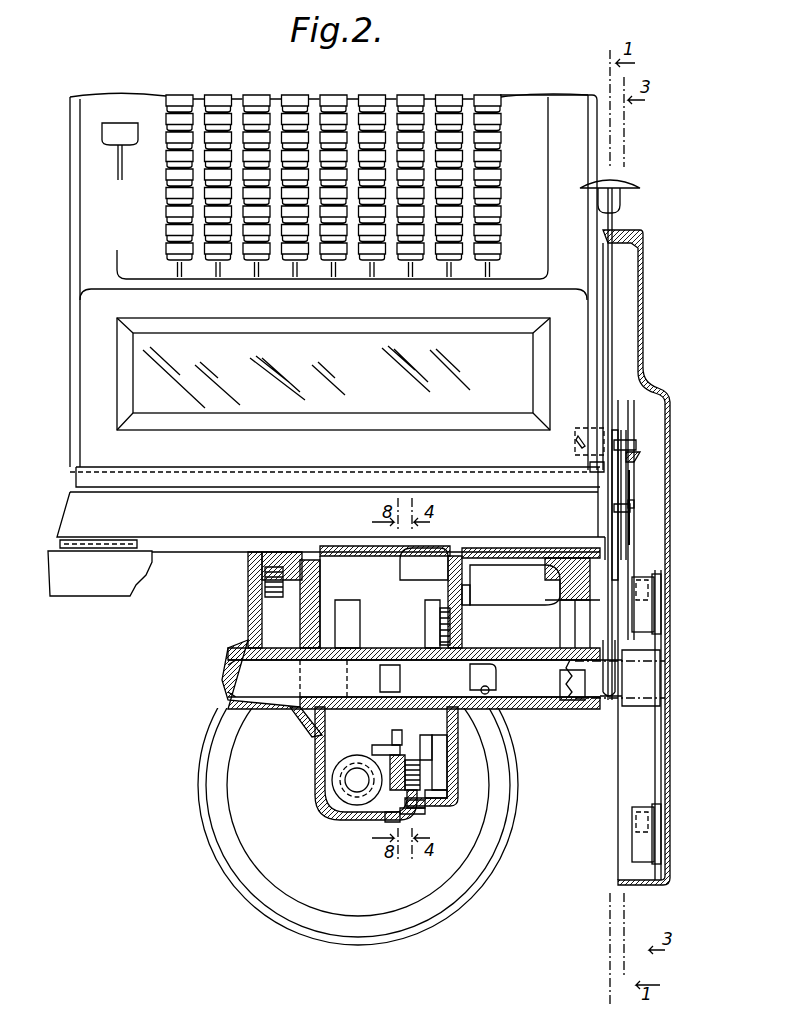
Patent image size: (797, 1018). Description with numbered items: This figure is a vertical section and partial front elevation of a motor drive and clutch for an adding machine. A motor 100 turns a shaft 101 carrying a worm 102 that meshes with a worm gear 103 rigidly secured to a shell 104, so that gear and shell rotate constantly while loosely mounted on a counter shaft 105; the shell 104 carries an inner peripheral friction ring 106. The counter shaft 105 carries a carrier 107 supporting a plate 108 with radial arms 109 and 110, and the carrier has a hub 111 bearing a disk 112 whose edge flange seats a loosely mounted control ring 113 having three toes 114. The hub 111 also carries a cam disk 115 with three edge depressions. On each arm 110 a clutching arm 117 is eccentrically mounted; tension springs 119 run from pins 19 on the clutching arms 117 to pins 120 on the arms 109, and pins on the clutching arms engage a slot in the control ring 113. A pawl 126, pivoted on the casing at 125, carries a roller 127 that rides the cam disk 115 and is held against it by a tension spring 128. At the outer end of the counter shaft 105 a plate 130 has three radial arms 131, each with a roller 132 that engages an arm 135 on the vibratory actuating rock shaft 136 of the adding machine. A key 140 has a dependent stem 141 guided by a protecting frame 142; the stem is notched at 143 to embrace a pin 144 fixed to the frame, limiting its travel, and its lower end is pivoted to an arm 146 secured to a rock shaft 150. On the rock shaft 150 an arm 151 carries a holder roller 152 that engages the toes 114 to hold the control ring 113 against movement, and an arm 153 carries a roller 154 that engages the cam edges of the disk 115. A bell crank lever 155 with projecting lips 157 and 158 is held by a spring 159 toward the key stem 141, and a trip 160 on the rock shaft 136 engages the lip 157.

The pins 19 is at (392, 738).
The motor 100 is at (288, 906).
The shaft 101 is at (345, 780).
The worm 102 is at (330, 800).
The worm gear 103 is at (320, 590).
The shell 104 is at (380, 586).
The counter shaft 105 is at (240, 684).
The inner peripheral friction ring 106 is at (408, 582).
The carrier 107 is at (470, 725).
The plate 108 is at (350, 640).
The radial arms 109 is at (458, 548).
The radial arms 110 is at (390, 680).
The hub 111 is at (442, 640).
The disk 112 is at (472, 556).
The control ring 113 is at (428, 802).
The toes 114 is at (420, 810).
The cam disk 115 is at (450, 775).
The clutching arm 117 is at (300, 712).
The tension springs 119 is at (380, 750).
The pins 120 is at (390, 765).
The pivot point on the casing 125 is at (558, 578).
The pawl 126 is at (466, 588).
The roller 127 is at (470, 598).
The tension spring 128 is at (452, 630).
The plate 130 is at (662, 740).
The radial arms 131 is at (657, 596).
The roller 132 is at (645, 612).
The arm 135 is at (618, 552).
The vibratory actuating rock shaft 136 is at (570, 444).
The key 140 is at (640, 186).
The stem 141 is at (614, 280).
The protecting frame 142 is at (660, 345).
The notch 143 is at (627, 492).
The pin 144 is at (630, 509).
The arm 146 is at (662, 690).
The rock shaft 150 is at (580, 700).
The arm 151 is at (489, 688).
The holder roller 152 is at (330, 624).
The arm 153 is at (465, 745).
The roller 154 is at (455, 762).
The bell crank lever 155 is at (590, 466).
The lip 157 is at (636, 448).
The lip 158 is at (630, 532).
The spring 159 is at (634, 505).
The trip 160 is at (640, 458).